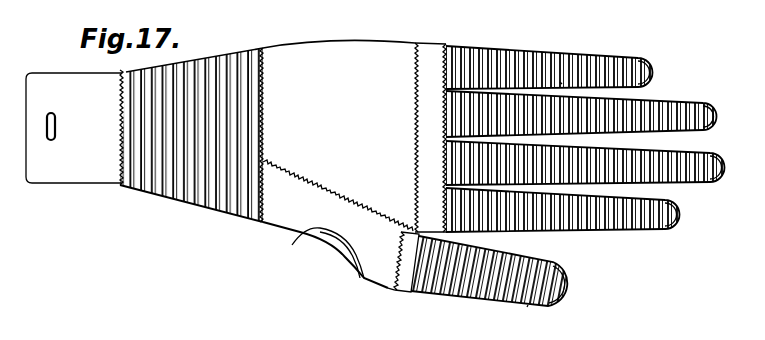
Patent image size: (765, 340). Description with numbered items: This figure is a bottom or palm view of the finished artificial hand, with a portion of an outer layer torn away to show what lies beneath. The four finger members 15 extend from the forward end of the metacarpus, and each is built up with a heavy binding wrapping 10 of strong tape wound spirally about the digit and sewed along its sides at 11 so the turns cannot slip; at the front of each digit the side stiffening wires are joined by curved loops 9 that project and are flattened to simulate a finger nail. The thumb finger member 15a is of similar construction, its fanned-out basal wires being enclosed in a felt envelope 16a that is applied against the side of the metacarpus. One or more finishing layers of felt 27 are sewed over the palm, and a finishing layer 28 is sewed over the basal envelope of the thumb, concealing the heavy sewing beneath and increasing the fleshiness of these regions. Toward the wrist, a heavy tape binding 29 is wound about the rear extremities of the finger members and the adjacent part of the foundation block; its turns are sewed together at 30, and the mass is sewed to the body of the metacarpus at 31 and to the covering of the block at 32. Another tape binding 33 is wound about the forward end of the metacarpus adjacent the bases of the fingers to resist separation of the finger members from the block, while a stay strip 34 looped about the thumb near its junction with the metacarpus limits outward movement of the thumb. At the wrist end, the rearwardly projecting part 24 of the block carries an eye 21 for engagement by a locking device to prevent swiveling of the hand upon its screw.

The curved loops 9 is at (717, 122).
The binding wrapping 10 is at (527, 80).
The side sewing 11 is at (560, 82).
The finger members 15 is at (633, 50).
The thumb finger member 15a is at (386, 292).
The envelope 16a is at (325, 257).
The eye 21 is at (56, 124).
The hanging tab 24 is at (48, 77).
The finishing layers of felt 27 is at (340, 136).
The finishing layer 28 is at (280, 232).
The tape binding 29 is at (182, 196).
The sewing of binding turns 30 is at (208, 62).
The sewing to metacarpus 31 is at (263, 135).
The sewing to block covering 32 is at (117, 143).
The tape binding 33 is at (432, 43).
The stay strip 34 is at (427, 293).